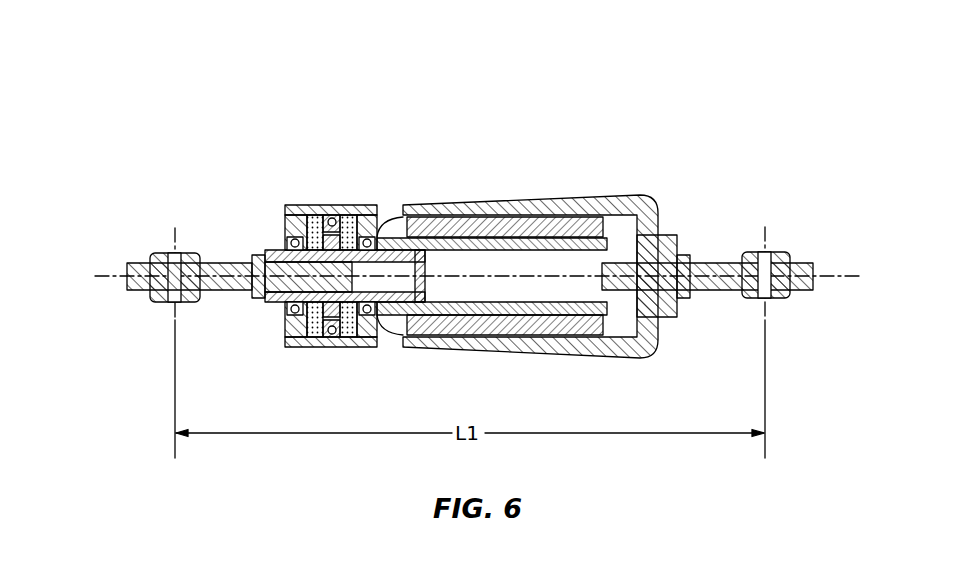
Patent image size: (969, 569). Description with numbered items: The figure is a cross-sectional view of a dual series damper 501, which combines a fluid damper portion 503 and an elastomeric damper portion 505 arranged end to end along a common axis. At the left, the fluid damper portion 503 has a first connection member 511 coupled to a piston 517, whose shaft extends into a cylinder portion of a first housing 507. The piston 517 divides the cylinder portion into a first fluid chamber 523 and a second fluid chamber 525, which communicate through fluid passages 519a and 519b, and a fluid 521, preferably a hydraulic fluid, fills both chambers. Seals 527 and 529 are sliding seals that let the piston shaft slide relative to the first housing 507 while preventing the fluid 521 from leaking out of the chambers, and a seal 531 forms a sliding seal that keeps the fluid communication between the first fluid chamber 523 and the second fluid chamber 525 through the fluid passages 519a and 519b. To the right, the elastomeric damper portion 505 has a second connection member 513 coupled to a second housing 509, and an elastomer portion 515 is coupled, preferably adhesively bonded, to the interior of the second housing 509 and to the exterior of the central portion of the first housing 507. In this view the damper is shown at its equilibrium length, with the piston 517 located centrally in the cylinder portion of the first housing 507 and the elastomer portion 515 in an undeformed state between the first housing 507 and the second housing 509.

The dual series damper 501 is at (457, 243).
The fluid damper portion 503 is at (296, 253).
The elastomeric damper portion 505 is at (568, 259).
The first housing 507 is at (343, 205).
The second housing 509 is at (603, 358).
The first connection member 511 is at (137, 262).
The second connection member 513 is at (786, 252).
The elastomer portion 515 is at (580, 225).
The piston 517 is at (347, 305).
The fluid passage 519a is at (318, 325).
The fluid passage 519b is at (318, 212).
The fluid 521 is at (357, 205).
The first fluid chamber 523 is at (310, 315).
The second fluid chamber 525 is at (360, 313).
The seal 527 is at (287, 240).
The seal 529 is at (378, 212).
The seal 531 is at (312, 205).